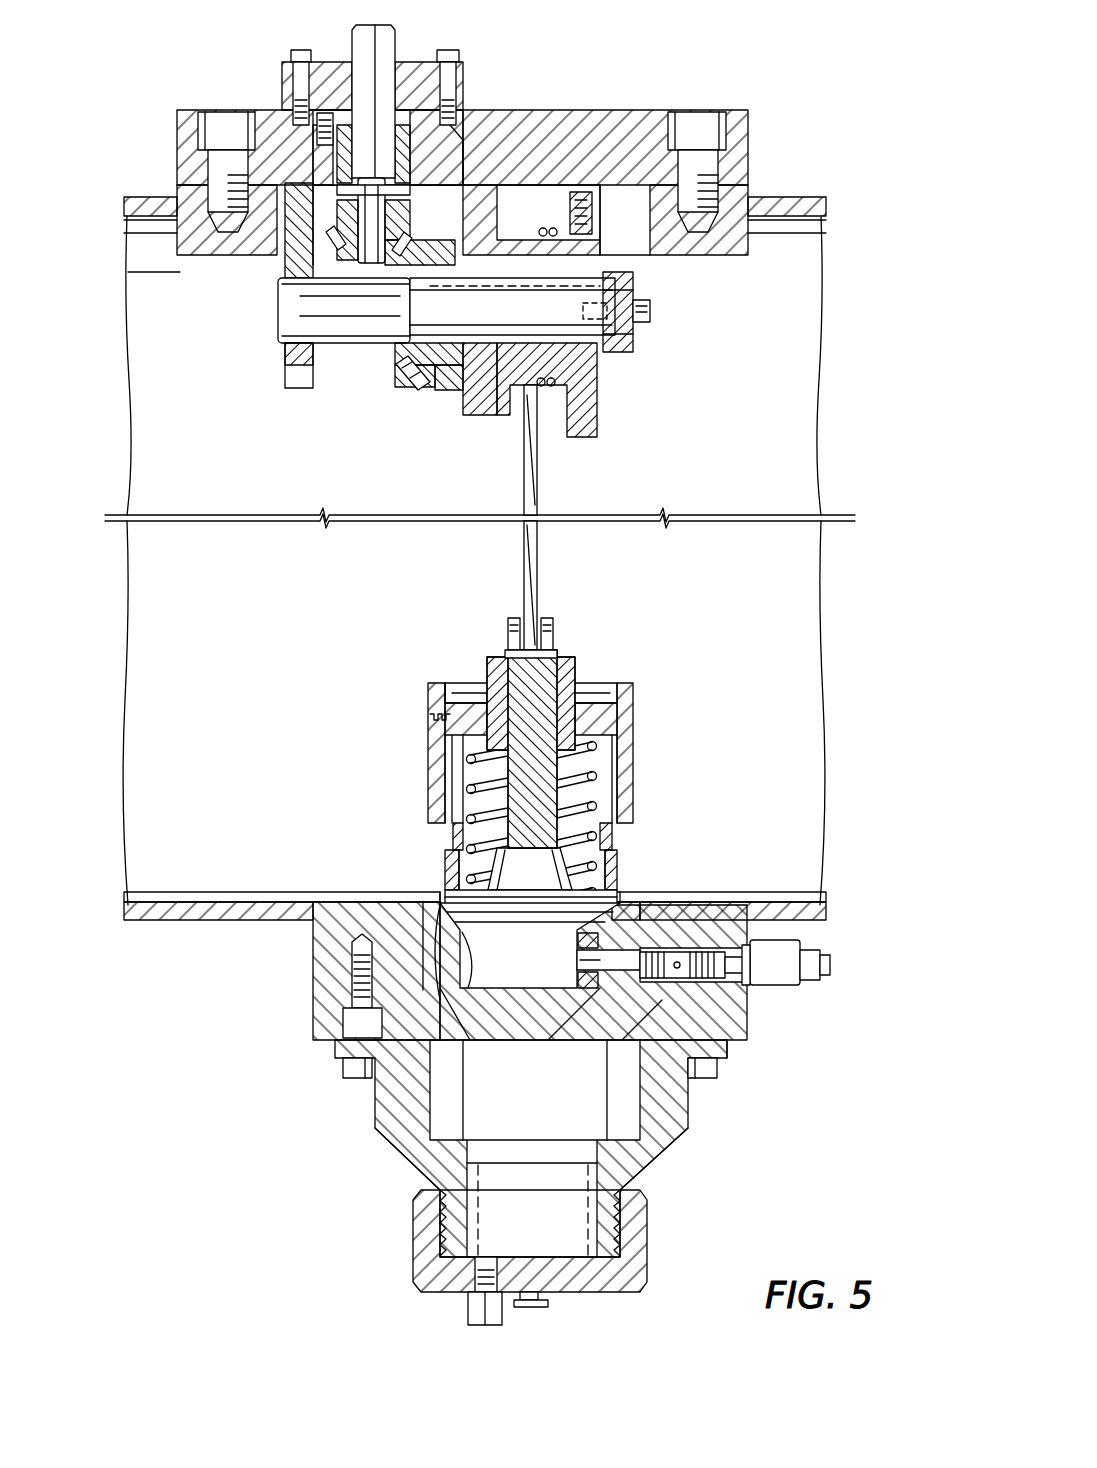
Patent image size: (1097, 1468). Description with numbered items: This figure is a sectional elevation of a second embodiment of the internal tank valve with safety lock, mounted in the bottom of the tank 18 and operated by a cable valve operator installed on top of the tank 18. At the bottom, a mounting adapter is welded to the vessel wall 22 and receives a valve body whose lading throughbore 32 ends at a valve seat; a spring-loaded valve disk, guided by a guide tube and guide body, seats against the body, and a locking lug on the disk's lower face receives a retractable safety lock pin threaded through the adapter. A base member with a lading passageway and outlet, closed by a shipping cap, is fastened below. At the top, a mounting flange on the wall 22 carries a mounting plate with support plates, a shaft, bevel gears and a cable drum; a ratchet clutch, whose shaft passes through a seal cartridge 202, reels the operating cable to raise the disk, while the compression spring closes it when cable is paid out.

The tank 18 is at (147, 830).
The vessel wall 22 is at (795, 198).
The lading throughbore 32 is at (540, 990).
The seal cartridge 202 is at (455, 140).